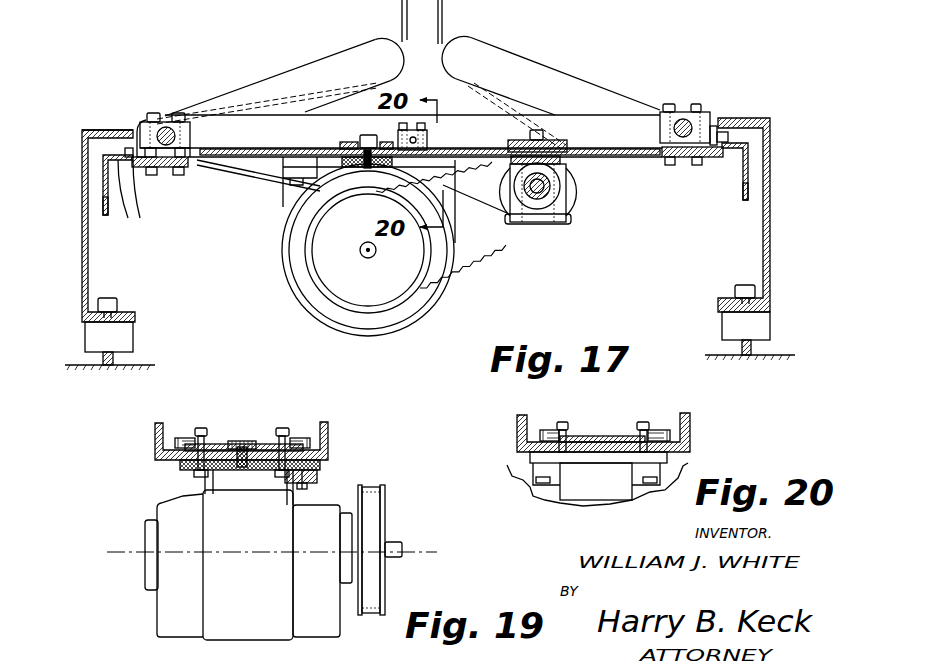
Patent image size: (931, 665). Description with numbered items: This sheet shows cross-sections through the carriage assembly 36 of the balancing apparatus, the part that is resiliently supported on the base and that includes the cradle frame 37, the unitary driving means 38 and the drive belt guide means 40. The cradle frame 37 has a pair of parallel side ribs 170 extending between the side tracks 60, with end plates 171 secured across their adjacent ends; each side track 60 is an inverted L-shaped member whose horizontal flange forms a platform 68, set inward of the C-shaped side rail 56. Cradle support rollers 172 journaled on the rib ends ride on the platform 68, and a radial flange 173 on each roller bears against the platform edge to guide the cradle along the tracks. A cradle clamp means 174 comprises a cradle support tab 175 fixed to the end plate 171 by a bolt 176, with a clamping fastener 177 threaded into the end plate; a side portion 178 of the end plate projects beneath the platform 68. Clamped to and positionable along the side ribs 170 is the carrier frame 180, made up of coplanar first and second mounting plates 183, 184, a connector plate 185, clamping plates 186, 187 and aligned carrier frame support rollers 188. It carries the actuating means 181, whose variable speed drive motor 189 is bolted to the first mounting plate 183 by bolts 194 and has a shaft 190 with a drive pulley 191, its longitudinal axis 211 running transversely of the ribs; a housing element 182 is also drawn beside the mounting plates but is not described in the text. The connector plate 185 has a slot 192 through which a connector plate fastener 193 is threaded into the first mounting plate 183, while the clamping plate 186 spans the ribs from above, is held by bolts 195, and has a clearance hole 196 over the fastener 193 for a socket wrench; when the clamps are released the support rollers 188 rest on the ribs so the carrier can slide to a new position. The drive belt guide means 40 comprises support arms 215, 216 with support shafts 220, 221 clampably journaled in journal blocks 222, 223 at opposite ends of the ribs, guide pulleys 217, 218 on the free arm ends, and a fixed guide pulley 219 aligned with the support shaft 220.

In FIG. 17, the carriage assembly 36 is at (702, 90).
In FIG. 17, the cradle frame 37 is at (558, 110).
In FIG. 17, the unitary driving means 38 is at (522, 252).
In FIG. 17, the drive belt guide means 40 is at (551, 59).
In FIG. 17, the side rail 56 is at (78, 211).
In FIG. 17, the side track 60 is at (100, 183).
In FIG. 17, the platform 68 is at (124, 216).
In FIG. 17, the side rib 170 is at (267, 120).
In FIG. 19, the side rib 170 is at (157, 437).
In FIG. 20, the side rib 170 is at (519, 432).
In FIG. 17, the end plate 171 is at (178, 176).
In FIG. 17, the cradle support roller 172 is at (728, 130).
In FIG. 17, the radial flange 173 is at (715, 128).
In FIG. 17, the cradle clamp means 174 is at (134, 126).
In FIG. 17, the cradle support tab 175 is at (126, 152).
In FIG. 17, the bolt 176 is at (190, 142).
In FIG. 17, the clamping fastener 177 is at (143, 128).
In FIG. 17, the side portion 178 is at (130, 212).
In FIG. 19, the carrier frame 180 is at (248, 435).
In FIG. 17, the actuating means 181 is at (295, 311).
In FIG. 19, the actuating means 181 is at (271, 537).
In FIG. 20, the actuating means 181 is at (588, 500).
In FIG. 17, the gear reducer 182 is at (578, 226).
In FIG. 17, the first mounting plate 183 is at (283, 198).
In FIG. 19, the first mounting plate 183 is at (182, 465).
In FIG. 20, the first mounting plate 183 is at (530, 461).
In FIG. 17, the second mounting plate 184 is at (569, 153).
In FIG. 17, the connector plate 185 is at (258, 172).
In FIG. 19, the connector plate 185 is at (265, 470).
In FIG. 20, the connector plate 185 is at (600, 440).
In FIG. 17, the clamping plate 186 is at (347, 143).
In FIG. 19, the clamping plate 186 is at (218, 445).
In FIG. 20, the clamping plate 186 is at (585, 440).
In FIG. 17, the clamping plate 187 is at (558, 137).
In FIG. 19, the carrier frame support roller 188 is at (183, 436).
In FIG. 20, the carrier frame support roller 188 is at (547, 432).
In FIG. 17, the variable speed drive motor 189 is at (300, 279).
In FIG. 19, the variable speed drive motor 189 is at (162, 606).
In FIG. 17, the shaft 190 is at (374, 258).
In FIG. 19, the shaft 190 is at (395, 542).
In FIG. 17, the drive pulley 191 is at (383, 298).
In FIG. 19, the drive pulley 191 is at (385, 508).
In FIG. 17, the slot 192 is at (327, 150).
In FIG. 17, the connector plate fastener 193 is at (367, 168).
In FIG. 19, the connector plate fastener 193 is at (245, 440).
In FIG. 19, the bolt 194 is at (300, 490).
In FIG. 19, the bolt 195 is at (201, 428).
In FIG. 19, the clearance hole 196 is at (252, 442).
In FIG. 19, the longitudinal axis 211 is at (120, 552).
In FIG. 17, the support arm 215 is at (343, 52).
In FIG. 17, the support arm 216 is at (516, 63).
In FIG. 17, the guide pulley 217 is at (380, 35).
In FIG. 17, the guide pulley 218 is at (466, 36).
In FIG. 17, the fixed guide pulley 219 is at (155, 112).
In FIG. 17, the support shaft 220 is at (170, 125).
In FIG. 17, the support shaft 221 is at (660, 130).
In FIG. 17, the journal block 222 is at (192, 126).
In FIG. 17, the journal block 223 is at (686, 117).